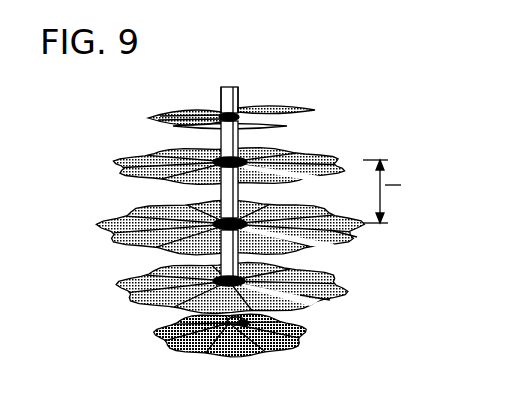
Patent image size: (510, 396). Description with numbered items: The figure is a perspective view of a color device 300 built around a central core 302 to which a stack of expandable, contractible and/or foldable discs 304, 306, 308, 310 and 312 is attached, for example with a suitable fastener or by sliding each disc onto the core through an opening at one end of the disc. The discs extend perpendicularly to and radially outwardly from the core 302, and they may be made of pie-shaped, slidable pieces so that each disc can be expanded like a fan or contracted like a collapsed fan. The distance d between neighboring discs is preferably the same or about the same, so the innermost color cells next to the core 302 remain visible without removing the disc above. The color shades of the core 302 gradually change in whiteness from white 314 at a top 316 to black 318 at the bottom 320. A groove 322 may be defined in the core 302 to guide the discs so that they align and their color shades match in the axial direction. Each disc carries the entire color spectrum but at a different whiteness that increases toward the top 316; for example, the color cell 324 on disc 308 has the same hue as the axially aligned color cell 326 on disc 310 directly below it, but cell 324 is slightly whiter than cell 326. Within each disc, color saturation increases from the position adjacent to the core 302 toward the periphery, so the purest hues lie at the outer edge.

The color device 300 is at (334, 87).
The central core 302 is at (221, 135).
The disc 304 is at (170, 112).
The disc 306 is at (115, 168).
The disc 308 is at (100, 238).
The disc 310 is at (116, 297).
The disc 312 is at (158, 338).
The white 314 is at (238, 97).
The top 316 is at (236, 98).
The black 318 is at (244, 324).
The bottom 320 is at (243, 321).
The groove 322 is at (233, 93).
The color cell 324 is at (357, 237).
The color cell 326 is at (337, 297).
The distance d is at (388, 191).